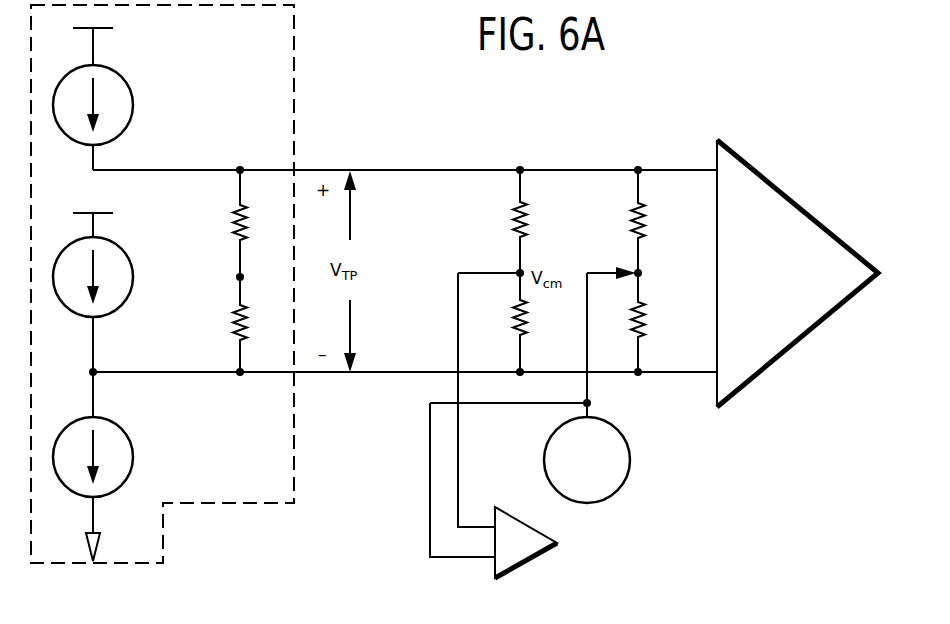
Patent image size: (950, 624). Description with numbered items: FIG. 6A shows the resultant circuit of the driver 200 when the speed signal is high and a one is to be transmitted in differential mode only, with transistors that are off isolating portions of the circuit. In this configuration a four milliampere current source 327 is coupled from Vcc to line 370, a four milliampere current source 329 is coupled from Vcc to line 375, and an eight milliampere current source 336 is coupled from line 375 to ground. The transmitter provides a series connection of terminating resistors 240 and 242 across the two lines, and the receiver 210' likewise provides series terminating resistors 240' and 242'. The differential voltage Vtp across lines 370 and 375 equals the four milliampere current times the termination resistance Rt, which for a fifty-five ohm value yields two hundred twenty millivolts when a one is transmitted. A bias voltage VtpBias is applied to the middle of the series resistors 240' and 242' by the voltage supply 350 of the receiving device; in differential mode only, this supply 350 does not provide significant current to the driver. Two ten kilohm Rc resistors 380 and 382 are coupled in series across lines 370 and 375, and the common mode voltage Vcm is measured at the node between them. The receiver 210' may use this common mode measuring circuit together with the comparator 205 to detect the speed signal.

The driver 200 is at (290, 462).
The 4 mA current source 327 is at (120, 82).
The 4 mA current source 329 is at (120, 254).
The 8 mA current source 336 is at (120, 434).
The terminating resistor 240 is at (230, 223).
The terminating resistor 242 is at (230, 324).
The terminating resistor 240' is at (643, 221).
The terminating resistor 242' is at (643, 322).
The Rc resistor 380 is at (508, 218).
The Rc resistor 382 is at (511, 323).
The line 370 is at (413, 168).
The line 375 is at (389, 376).
The voltage supply 350 is at (622, 485).
The comparator 205 is at (535, 560).
The receiver 210' is at (797, 273).